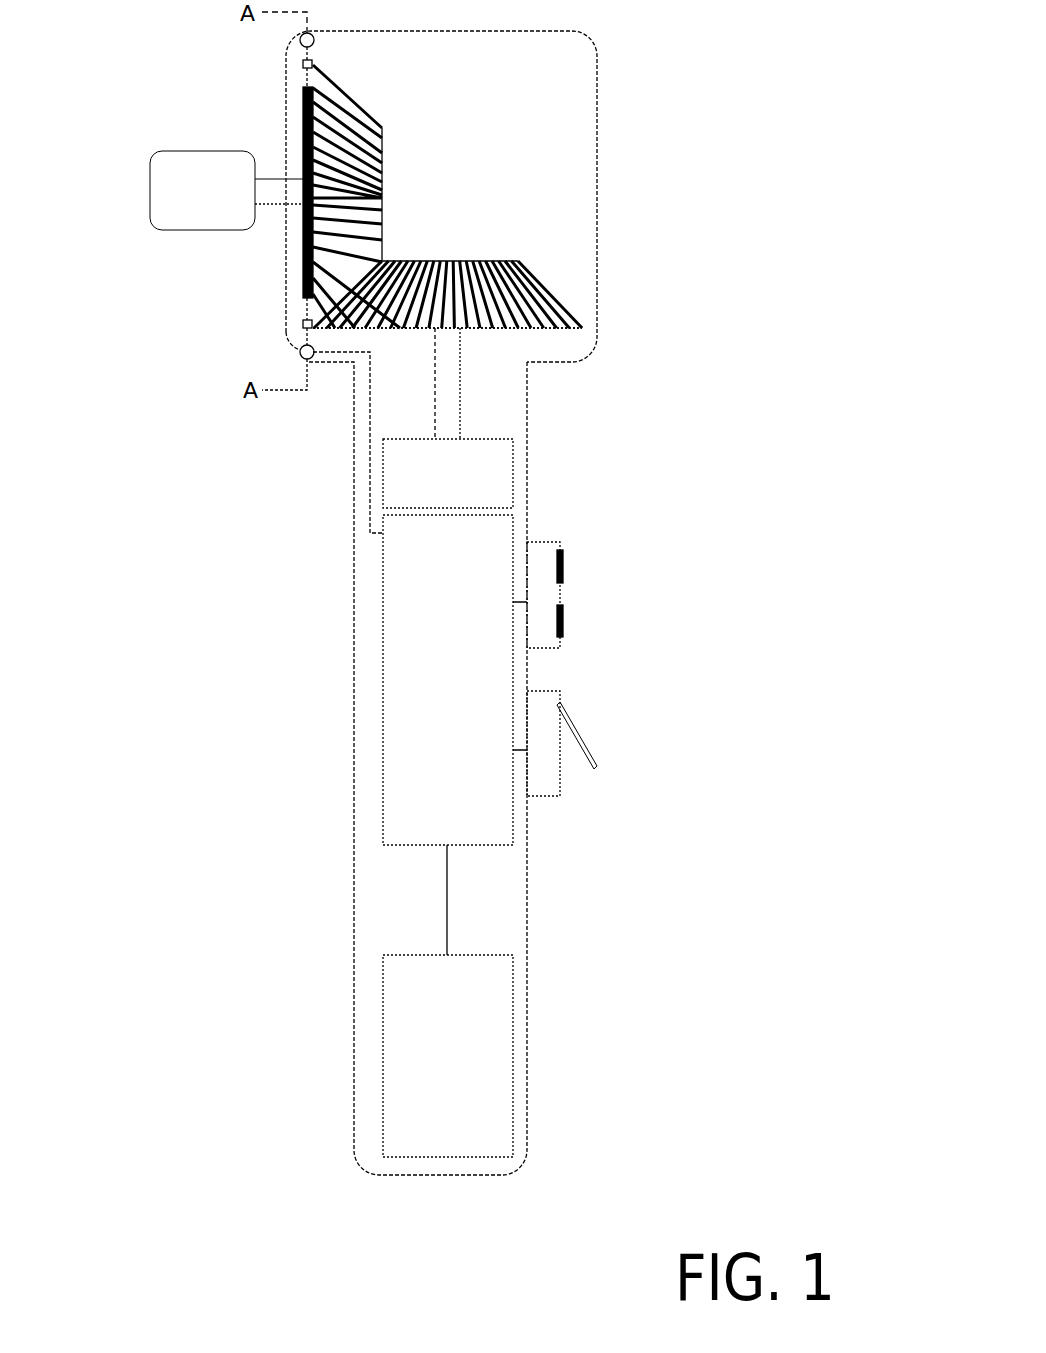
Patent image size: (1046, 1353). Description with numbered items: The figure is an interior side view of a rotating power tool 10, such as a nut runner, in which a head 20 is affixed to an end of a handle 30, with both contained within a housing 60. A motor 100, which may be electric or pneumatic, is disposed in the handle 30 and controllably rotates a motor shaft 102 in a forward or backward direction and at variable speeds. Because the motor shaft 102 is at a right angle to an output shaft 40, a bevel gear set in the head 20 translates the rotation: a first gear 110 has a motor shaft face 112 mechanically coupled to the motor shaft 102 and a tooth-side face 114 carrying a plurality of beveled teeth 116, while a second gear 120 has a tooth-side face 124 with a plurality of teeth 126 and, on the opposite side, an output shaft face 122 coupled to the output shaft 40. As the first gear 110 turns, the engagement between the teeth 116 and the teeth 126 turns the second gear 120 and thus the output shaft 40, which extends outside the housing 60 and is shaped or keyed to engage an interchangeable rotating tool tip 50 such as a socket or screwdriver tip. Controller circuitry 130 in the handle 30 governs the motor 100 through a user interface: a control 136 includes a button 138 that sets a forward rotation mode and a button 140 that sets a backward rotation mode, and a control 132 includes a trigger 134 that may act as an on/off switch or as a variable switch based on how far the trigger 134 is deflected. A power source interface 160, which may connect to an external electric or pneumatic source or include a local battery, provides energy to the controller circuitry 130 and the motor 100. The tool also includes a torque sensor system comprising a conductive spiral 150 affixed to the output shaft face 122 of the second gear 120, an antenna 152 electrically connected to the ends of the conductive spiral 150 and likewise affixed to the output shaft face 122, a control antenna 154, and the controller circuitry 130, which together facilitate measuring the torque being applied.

The rotating power tool 10 is at (775, 141).
The head 20 is at (605, 86).
The handle 30 is at (332, 635).
The output shaft 40 is at (280, 186).
The rotating tool tip 50 is at (162, 197).
The housing 60 is at (597, 195).
The motor 100 is at (448, 473).
The motor shaft 102 is at (460, 383).
The first gear 110 is at (500, 307).
The motor shaft face 112 is at (545, 330).
The tooth-side face 114 is at (427, 260).
The teeth 116 is at (530, 300).
The second gear 120 is at (402, 196).
The output shaft face 122 is at (303, 250).
The tooth-side face 124 is at (382, 151).
The teeth 126 is at (382, 178).
The controller circuitry 130 is at (455, 735).
The control 132 is at (617, 765).
The trigger 134 is at (578, 730).
The control 136 is at (604, 574).
The button 138 is at (565, 563).
The button 140 is at (565, 618).
The conductive spiral 150 is at (303, 277).
The antenna 152 is at (303, 65).
The control antenna 154 is at (299, 42).
The power source interface 160 is at (448, 1056).